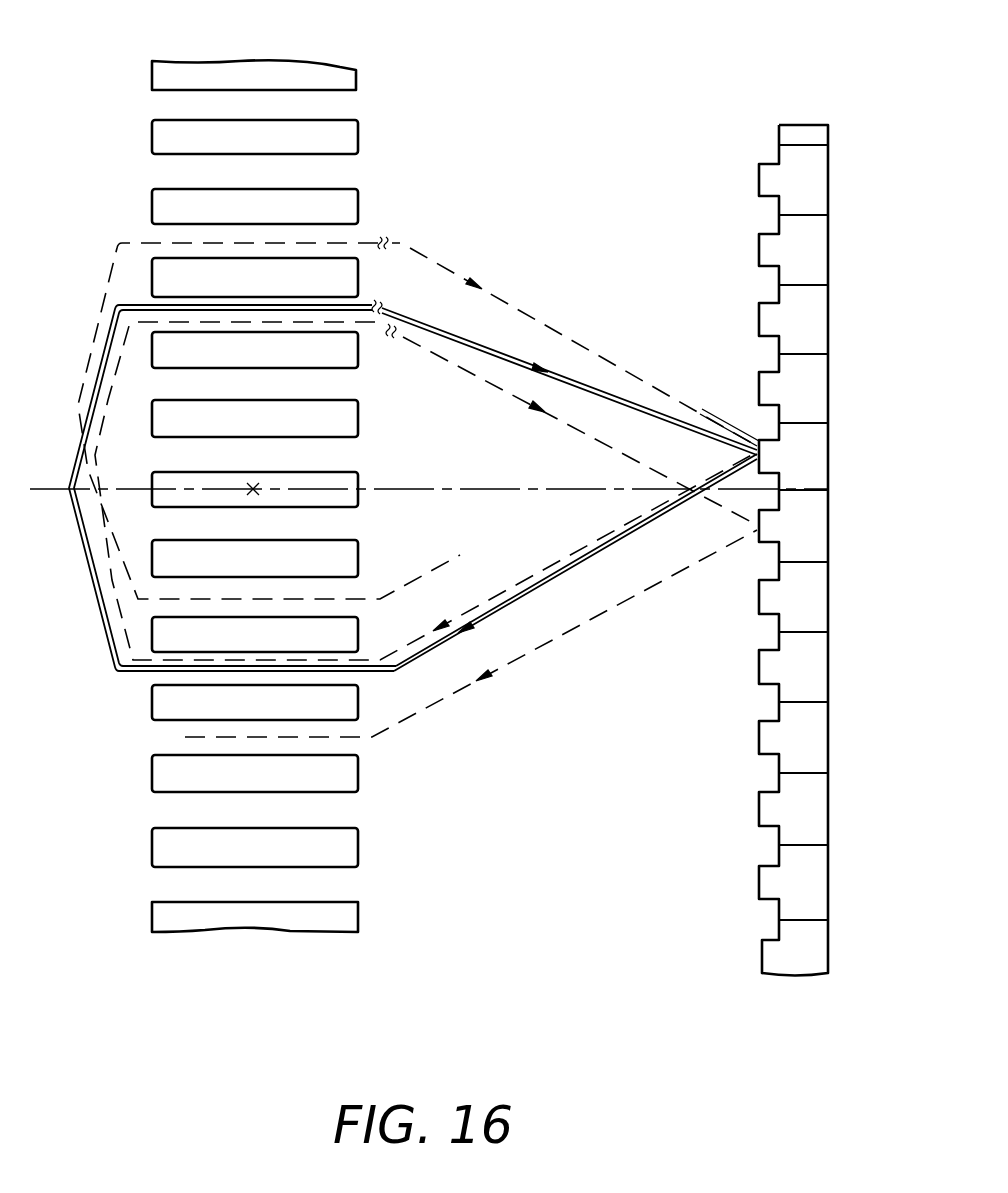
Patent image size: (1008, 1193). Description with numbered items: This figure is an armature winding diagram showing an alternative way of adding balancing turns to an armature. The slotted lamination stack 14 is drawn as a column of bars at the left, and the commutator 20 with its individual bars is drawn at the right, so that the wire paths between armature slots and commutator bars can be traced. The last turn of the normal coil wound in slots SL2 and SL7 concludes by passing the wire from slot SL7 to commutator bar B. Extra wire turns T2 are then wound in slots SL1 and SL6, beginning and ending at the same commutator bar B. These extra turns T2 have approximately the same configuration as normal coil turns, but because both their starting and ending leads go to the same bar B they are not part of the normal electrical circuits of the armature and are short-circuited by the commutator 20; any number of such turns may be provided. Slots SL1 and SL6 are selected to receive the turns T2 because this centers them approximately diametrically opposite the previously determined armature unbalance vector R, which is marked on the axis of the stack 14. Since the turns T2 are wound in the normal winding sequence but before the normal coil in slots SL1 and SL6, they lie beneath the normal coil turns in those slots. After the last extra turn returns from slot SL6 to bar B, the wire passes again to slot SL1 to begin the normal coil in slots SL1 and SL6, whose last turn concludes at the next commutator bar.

The stack of laminations 14 is at (264, 49).
The commutator 20 is at (799, 120).
The armature slot SL7 is at (157, 232).
The armature slot SL6 is at (152, 298).
The armature slot SL2 is at (343, 585).
The armature slot SL1 is at (350, 678).
The armature unbalance vector R is at (258, 491).
The commutator bar B is at (814, 459).
The extra wire turns T2 is at (613, 560).